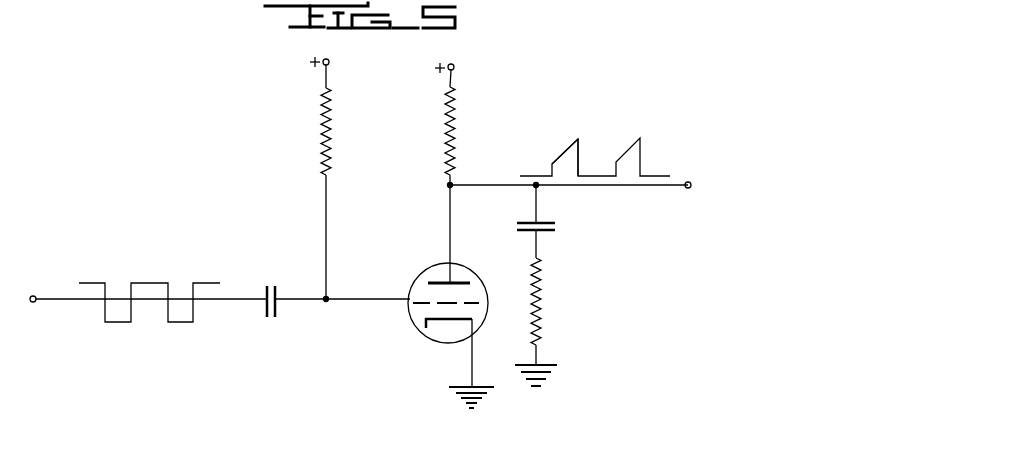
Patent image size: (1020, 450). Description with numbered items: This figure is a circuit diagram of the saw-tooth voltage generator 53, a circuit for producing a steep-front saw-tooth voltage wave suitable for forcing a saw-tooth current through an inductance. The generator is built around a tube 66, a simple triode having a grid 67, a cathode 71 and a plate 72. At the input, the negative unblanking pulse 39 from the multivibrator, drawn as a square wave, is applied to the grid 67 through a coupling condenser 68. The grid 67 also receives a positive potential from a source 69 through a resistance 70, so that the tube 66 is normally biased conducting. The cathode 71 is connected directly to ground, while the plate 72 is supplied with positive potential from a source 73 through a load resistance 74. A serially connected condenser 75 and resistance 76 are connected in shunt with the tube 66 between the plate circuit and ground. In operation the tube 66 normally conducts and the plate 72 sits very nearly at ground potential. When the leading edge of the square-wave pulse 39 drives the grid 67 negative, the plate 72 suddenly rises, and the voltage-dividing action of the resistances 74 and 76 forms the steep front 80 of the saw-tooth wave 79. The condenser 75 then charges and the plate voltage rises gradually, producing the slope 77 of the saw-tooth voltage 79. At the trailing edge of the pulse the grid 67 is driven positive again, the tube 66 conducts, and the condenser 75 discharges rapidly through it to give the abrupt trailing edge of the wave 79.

The negative unblanking pulse 39 is at (128, 293).
The saw-tooth voltage generator 53 is at (311, 289).
The tube 66 is at (410, 290).
The grid 67 is at (418, 306).
The coupling condenser 68 is at (270, 318).
The source of positive potential 69 is at (329, 62).
The resistance 70 is at (329, 112).
The cathode 71 is at (432, 324).
The plate 72 is at (470, 283).
The source of positive potential 73 is at (454, 66).
The load resistance 74 is at (452, 113).
The condenser 75 is at (553, 231).
The resistance 76 is at (541, 295).
The slope 77 is at (568, 152).
The saw-tooth wave 79 is at (580, 154).
The steep front 80 is at (552, 170).